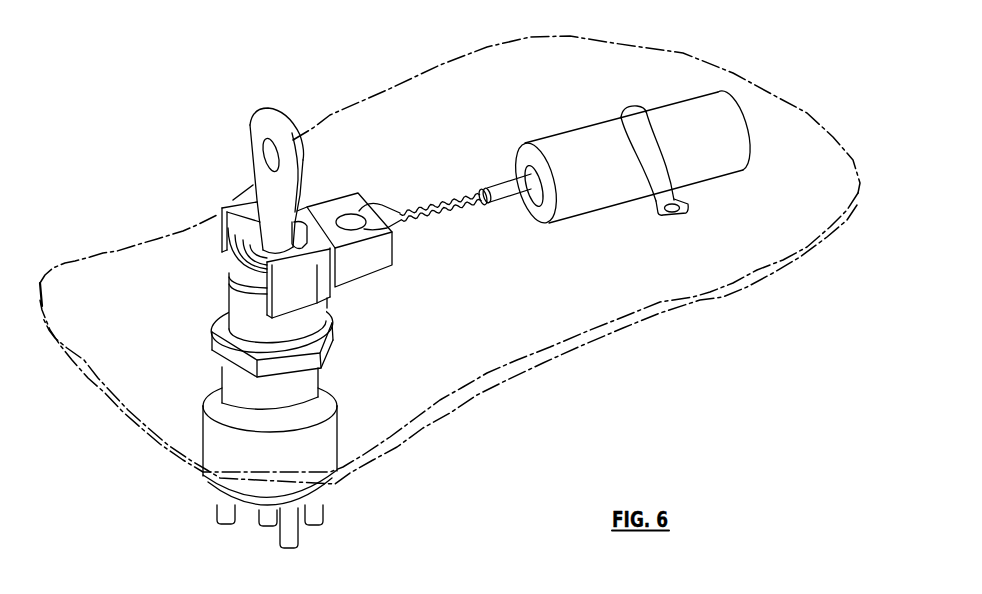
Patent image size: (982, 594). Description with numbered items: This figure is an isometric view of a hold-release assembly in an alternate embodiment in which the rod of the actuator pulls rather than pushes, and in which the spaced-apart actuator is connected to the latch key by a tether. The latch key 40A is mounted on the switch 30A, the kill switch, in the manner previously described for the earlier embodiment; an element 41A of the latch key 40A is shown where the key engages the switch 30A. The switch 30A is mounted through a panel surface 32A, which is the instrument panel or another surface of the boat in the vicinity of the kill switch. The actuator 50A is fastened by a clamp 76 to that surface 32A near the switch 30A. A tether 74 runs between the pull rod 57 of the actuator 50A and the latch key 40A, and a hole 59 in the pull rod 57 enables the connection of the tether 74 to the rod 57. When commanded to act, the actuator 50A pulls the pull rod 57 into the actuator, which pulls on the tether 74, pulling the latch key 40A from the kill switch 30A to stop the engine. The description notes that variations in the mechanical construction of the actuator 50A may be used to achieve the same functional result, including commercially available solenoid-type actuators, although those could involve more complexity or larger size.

The switch 30A is at (257, 318).
The panel 32A is at (717, 233).
The latch key 40A is at (245, 210).
The key 41A is at (348, 217).
The actuator 50A is at (561, 123).
The pull rod 57 is at (506, 198).
The hole 59 is at (478, 192).
The tether 74 is at (440, 207).
The clamp 76 is at (654, 203).